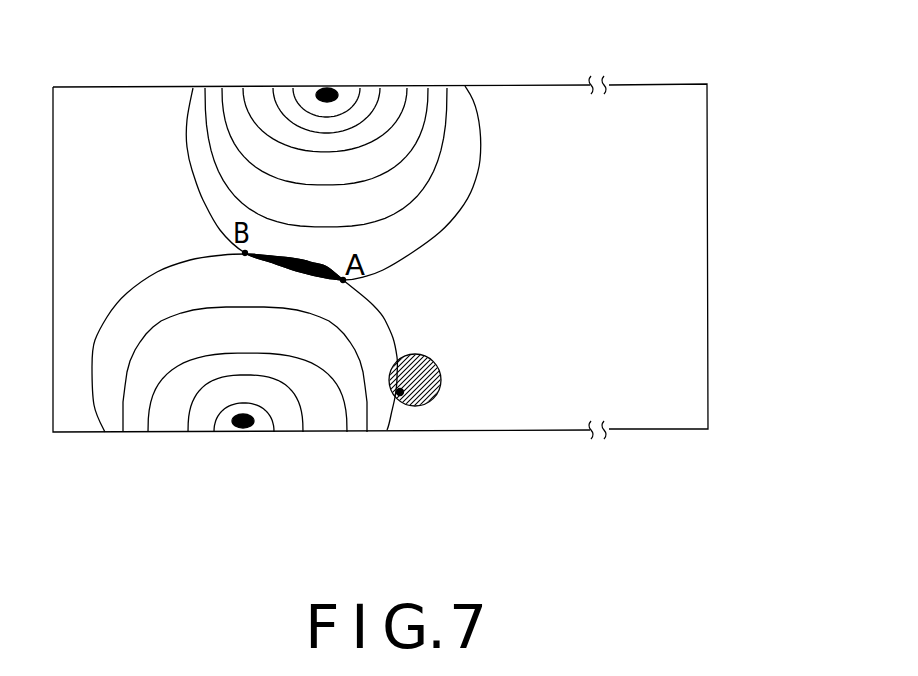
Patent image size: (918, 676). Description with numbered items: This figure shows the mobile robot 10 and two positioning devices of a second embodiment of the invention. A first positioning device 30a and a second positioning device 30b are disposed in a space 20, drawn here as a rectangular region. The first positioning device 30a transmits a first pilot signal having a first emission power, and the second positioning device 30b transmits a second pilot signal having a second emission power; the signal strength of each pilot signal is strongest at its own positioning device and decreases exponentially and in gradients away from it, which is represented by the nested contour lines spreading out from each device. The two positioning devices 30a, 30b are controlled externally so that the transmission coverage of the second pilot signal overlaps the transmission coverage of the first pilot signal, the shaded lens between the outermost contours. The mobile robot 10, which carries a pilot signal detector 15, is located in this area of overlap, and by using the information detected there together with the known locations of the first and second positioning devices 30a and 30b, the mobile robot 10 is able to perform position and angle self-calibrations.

The space 20 is at (707, 143).
The first positioning device 30a is at (322, 86).
The second positioning device 30b is at (241, 428).
The mobile robot 10 is at (448, 370).
The pilot signal detector 15 is at (400, 392).